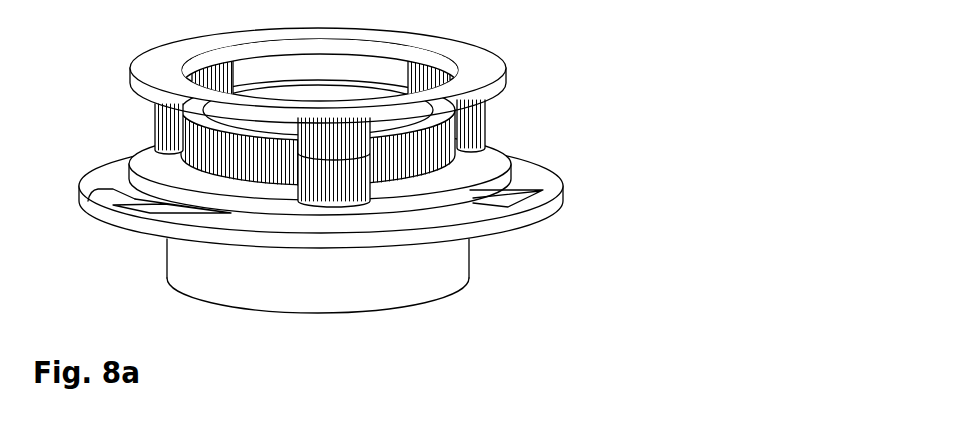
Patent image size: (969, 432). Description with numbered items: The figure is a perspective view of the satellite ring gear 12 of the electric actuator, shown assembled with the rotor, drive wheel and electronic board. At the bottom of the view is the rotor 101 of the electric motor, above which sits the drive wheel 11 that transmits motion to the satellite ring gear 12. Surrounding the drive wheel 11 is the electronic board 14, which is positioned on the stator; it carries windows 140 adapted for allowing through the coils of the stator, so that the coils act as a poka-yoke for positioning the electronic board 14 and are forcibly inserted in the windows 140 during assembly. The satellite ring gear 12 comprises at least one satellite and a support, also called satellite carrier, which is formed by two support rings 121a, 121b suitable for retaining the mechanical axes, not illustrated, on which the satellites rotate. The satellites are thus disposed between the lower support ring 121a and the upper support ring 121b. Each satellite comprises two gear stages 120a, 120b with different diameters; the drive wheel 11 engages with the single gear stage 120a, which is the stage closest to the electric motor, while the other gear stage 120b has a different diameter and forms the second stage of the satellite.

The drive wheel 11 is at (318, 269).
The rotor 101 is at (338, 265).
The electronic board 14 is at (407, 222).
The windows 140 is at (92, 200).
The satellite ring gear 12 is at (389, 123).
The support ring 121a is at (537, 219).
The gear stage 120b is at (486, 104).
The gear stage 120a is at (167, 130).
The support ring 121b is at (492, 72).